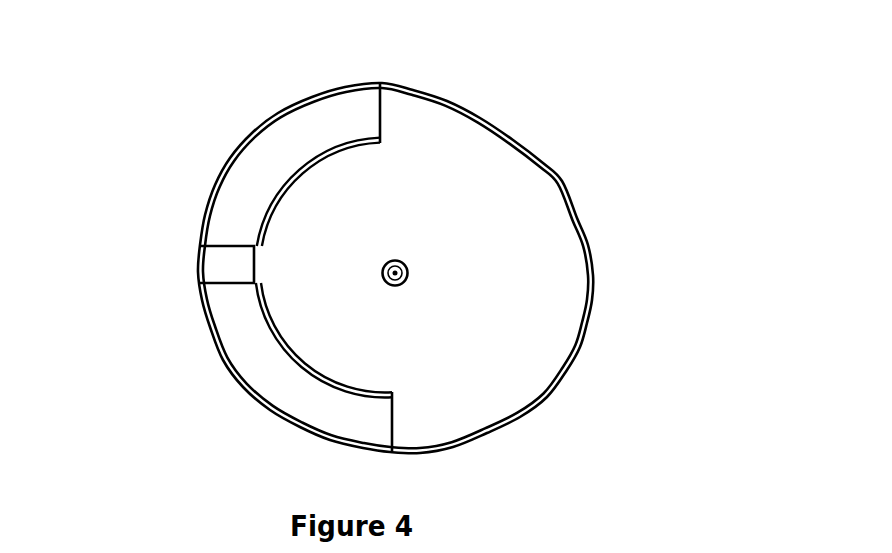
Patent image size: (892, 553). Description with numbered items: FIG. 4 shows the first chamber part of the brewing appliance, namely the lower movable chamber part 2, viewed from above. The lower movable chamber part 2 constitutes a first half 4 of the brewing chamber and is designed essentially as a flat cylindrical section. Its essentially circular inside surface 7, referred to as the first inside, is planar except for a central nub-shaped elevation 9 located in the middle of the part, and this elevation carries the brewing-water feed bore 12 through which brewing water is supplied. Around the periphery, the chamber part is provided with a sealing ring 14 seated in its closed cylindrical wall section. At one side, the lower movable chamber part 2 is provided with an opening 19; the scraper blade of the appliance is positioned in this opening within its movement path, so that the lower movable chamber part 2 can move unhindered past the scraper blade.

The lower movable chamber part 2 is at (422, 226).
The first half of the brewing chamber 4 is at (278, 155).
The inside surface 7 is at (485, 167).
The nub-shaped elevation 9 is at (409, 274).
The brewing-water feed bore 12 is at (410, 279).
The sealing ring 14 is at (592, 247).
The opening 19 is at (233, 267).